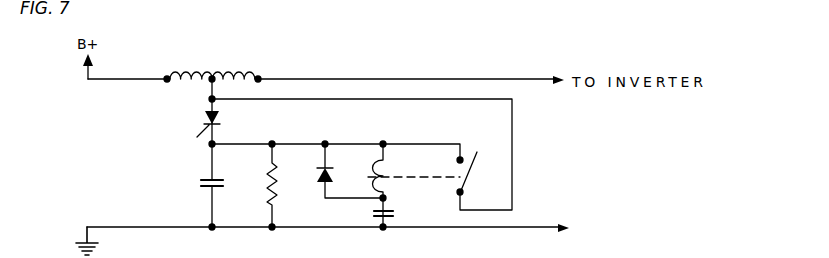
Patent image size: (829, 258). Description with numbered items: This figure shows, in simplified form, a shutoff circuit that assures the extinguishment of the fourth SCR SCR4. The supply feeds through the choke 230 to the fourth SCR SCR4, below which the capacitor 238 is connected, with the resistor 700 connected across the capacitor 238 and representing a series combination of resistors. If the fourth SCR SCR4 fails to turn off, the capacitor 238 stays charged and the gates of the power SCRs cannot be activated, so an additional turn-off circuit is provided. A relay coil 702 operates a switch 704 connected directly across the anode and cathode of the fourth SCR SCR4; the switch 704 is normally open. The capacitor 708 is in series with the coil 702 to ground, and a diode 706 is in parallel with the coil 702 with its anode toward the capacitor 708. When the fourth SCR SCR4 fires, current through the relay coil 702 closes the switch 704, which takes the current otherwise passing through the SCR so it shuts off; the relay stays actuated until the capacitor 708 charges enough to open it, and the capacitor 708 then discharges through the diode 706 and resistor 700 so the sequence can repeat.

The choke 230 is at (209, 74).
The fourth SCR SCR4 is at (204, 124).
The capacitor 238 is at (197, 188).
The resistor 700 is at (267, 190).
The relay coil 702 is at (401, 160).
The switch 704 is at (470, 173).
The diode 706 is at (320, 173).
The capacitor 708 is at (396, 213).